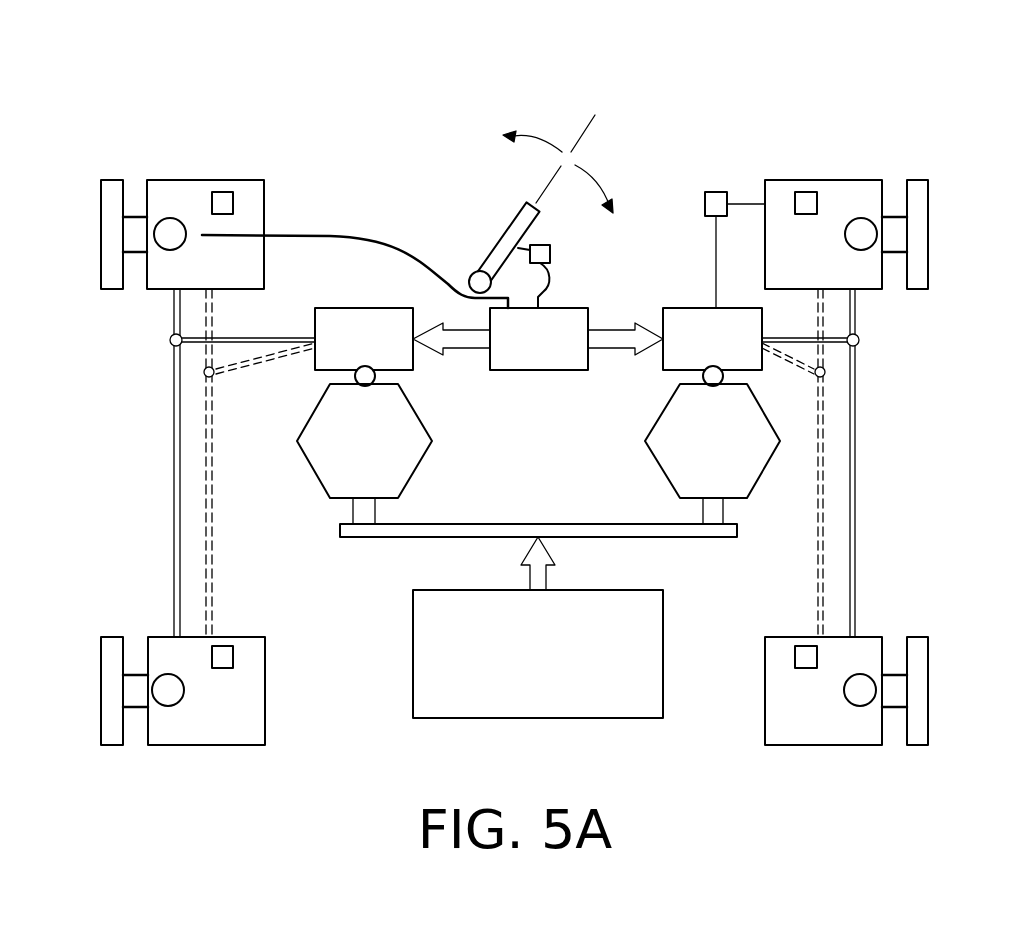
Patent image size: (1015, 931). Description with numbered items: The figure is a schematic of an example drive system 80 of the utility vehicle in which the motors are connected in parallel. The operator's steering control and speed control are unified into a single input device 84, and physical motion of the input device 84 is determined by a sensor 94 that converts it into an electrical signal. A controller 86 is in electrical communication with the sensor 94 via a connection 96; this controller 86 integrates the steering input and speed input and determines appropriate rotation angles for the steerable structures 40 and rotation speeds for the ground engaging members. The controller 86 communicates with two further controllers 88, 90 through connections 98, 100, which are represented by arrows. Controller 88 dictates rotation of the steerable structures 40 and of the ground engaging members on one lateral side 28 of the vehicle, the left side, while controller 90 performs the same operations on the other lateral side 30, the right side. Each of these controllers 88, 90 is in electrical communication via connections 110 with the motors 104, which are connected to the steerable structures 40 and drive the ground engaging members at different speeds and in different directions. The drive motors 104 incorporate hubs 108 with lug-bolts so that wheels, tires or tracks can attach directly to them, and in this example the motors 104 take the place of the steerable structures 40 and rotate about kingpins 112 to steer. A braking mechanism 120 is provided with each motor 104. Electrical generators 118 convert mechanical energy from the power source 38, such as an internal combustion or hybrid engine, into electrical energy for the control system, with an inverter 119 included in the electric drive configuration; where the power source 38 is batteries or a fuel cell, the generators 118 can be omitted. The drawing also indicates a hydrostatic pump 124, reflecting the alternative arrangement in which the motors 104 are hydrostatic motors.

The drive system 80 is at (378, 130).
The lateral side 28 is at (52, 468).
The lateral side 30 is at (954, 485).
The steerable structure 40 is at (513, 453).
The motor 104 is at (252, 180).
The hub 108 is at (112, 180).
The kingpin 112 is at (170, 234).
The braking mechanism 120 is at (220, 192).
The connection 110 is at (280, 338).
The hydrostatic pump 124 is at (713, 192).
The input device 84 is at (512, 224).
The sensor 94 is at (550, 252).
The connection 96 is at (549, 280).
The controller 88 is at (348, 353).
The controller 86 is at (523, 353).
The controller 90 is at (696, 353).
The connection 98 is at (470, 350).
The connection 100 is at (609, 350).
The inverter 119 is at (354, 380).
The electrical generator 118 is at (342, 455).
The power source 38 is at (538, 718).